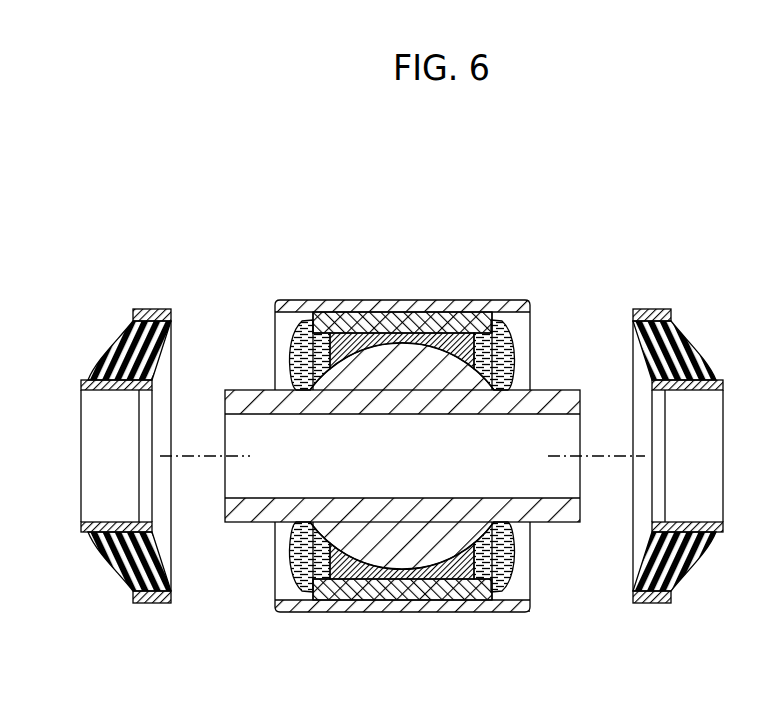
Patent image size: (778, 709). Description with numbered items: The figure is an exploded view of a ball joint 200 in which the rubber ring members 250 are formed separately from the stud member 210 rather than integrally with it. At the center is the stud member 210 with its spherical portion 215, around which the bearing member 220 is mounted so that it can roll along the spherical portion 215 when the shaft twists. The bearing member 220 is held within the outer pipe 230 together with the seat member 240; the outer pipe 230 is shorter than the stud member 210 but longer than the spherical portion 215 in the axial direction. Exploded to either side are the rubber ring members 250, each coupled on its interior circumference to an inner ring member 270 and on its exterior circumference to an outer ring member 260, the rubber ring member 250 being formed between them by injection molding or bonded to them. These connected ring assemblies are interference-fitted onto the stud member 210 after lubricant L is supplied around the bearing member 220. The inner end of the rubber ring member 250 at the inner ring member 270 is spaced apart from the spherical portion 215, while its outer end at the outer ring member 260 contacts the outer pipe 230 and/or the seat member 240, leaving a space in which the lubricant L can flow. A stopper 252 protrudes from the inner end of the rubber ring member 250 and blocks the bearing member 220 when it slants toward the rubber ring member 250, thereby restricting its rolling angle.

The ball joint 200 is at (428, 163).
The stud member 210 is at (549, 400).
The spherical portion 215 is at (425, 382).
The bearing member 220 is at (345, 335).
The outer pipe 230 is at (406, 308).
The seat member 240 is at (307, 331).
The rubber ring member 250 is at (127, 417).
The stopper 252 is at (152, 380).
The outer ring member 260 is at (148, 308).
The inner ring member 270 is at (82, 385).
The lubricant L is at (505, 548).